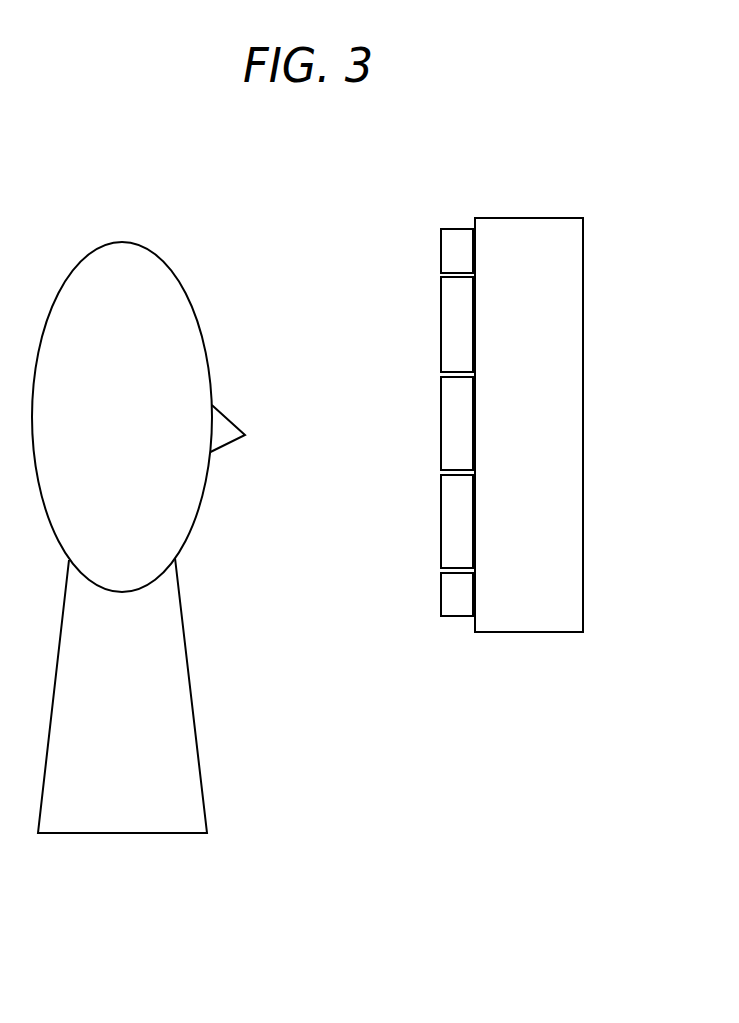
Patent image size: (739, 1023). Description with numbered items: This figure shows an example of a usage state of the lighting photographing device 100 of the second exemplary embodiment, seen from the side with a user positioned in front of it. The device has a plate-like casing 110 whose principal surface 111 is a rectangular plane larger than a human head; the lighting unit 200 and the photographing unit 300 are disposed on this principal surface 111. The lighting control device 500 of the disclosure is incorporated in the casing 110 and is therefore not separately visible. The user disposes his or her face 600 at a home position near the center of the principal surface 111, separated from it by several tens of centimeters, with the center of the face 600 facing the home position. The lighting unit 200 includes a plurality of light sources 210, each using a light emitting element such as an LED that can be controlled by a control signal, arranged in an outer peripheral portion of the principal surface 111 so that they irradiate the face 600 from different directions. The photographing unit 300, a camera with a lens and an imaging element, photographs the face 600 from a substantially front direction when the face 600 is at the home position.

The face 600 is at (113, 228).
The lighting photographing device 100 is at (497, 383).
The lighting control device 500 is at (497, 383).
The casing 110 is at (530, 218).
The principal surface 111 is at (466, 205).
The lighting unit 200 is at (422, 456).
The photographing unit 300 is at (440, 253).
The light source 210 is at (445, 517).